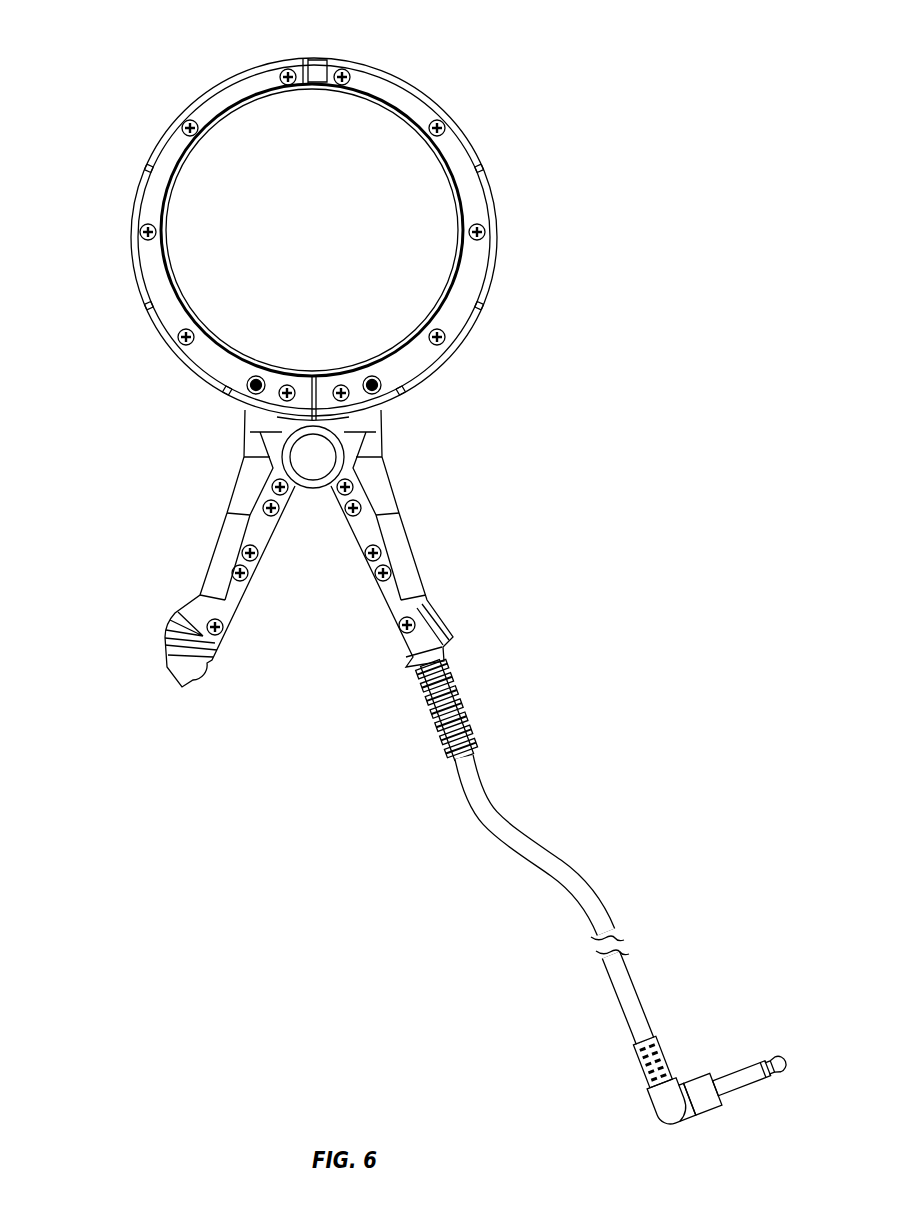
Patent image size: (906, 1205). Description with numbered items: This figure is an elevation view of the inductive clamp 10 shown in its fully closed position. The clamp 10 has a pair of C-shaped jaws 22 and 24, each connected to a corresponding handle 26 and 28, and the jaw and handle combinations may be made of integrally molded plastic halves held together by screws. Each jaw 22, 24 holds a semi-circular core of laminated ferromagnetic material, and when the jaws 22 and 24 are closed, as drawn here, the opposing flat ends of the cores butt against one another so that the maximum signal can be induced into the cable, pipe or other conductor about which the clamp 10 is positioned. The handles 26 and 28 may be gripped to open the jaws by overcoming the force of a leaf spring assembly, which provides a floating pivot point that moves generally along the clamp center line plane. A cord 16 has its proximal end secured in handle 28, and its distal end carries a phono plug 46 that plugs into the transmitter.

The inductive clamp 10 is at (495, 148).
The cord 16 is at (610, 983).
The C-shaped jaw 22 is at (130, 230).
The C-shaped jaw 24 is at (502, 225).
The handle 26 is at (210, 557).
The handle 28 is at (408, 553).
The phono plug 46 is at (737, 1067).